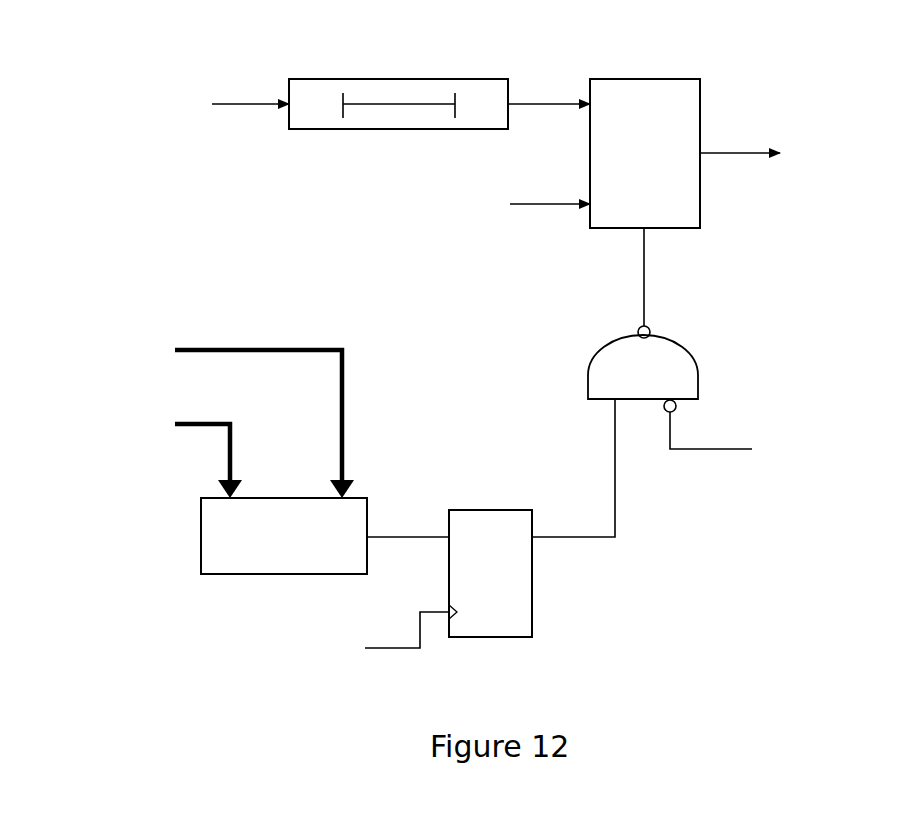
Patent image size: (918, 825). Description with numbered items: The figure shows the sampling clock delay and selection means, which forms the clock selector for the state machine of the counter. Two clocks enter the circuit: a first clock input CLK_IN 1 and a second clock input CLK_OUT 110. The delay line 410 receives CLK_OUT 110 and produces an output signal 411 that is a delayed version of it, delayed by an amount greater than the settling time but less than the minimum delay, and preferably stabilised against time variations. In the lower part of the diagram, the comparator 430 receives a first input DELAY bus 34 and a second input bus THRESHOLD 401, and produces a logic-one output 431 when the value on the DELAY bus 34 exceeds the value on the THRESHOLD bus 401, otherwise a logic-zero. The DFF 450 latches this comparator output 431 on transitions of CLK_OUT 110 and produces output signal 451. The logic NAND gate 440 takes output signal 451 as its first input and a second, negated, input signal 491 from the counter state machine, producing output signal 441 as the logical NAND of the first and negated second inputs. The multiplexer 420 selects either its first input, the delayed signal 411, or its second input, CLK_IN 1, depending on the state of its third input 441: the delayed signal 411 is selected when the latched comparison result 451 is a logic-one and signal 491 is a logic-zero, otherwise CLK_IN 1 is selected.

The second clock input CLK_OUT 110 is at (232, 93).
The delay line 410 is at (317, 71).
The output signal 411 is at (535, 93).
The multiplexer 420 is at (618, 71).
The first clock input CLK_IN 1 is at (535, 195).
The output signal 441 is at (658, 280).
The logic NAND gate 440 is at (590, 352).
The output signal 451 is at (600, 425).
The input signal 491 is at (725, 440).
The second input bus THRESHOLD 401 is at (203, 342).
The first input DELAY(n)[0:N-1] 34 is at (203, 416).
The output 431 is at (395, 512).
The comparator 430 is at (229, 583).
The DFF 450 is at (503, 647).